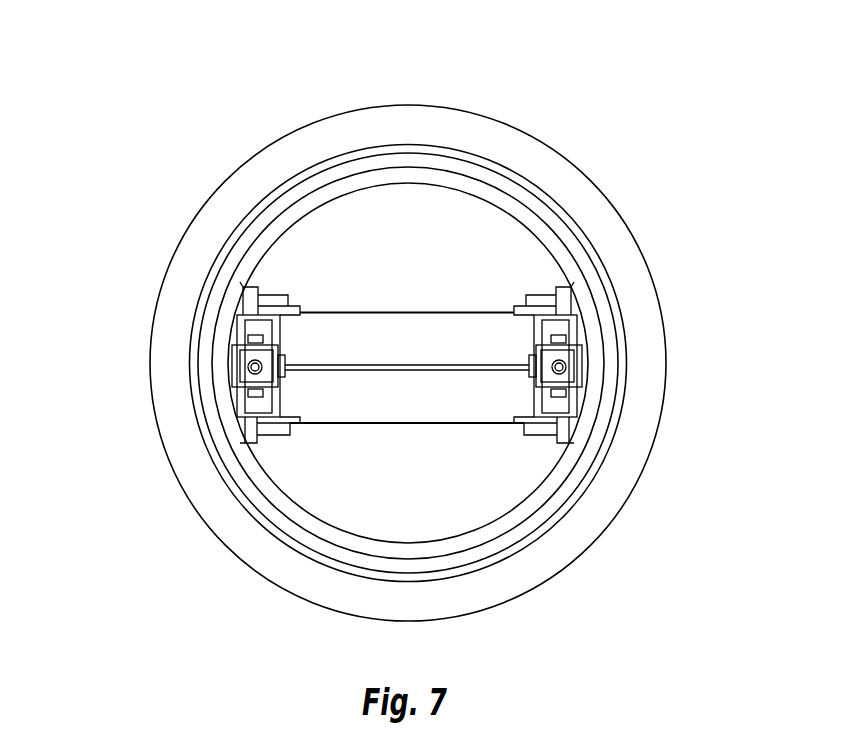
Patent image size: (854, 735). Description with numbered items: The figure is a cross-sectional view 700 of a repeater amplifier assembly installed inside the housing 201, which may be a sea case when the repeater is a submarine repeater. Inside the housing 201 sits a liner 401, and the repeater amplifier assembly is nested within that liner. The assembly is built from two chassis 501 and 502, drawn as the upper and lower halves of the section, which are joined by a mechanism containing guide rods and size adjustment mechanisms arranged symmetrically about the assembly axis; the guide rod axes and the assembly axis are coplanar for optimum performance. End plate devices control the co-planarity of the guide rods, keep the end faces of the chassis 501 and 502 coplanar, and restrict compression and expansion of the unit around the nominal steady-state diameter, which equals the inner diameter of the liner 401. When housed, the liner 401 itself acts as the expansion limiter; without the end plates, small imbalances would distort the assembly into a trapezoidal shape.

The cross-sectional view 700 is at (423, 23).
The housing 201 is at (630, 263).
The liner 401 is at (542, 215).
The chassis 501 is at (424, 267).
The chassis 502 is at (424, 502).